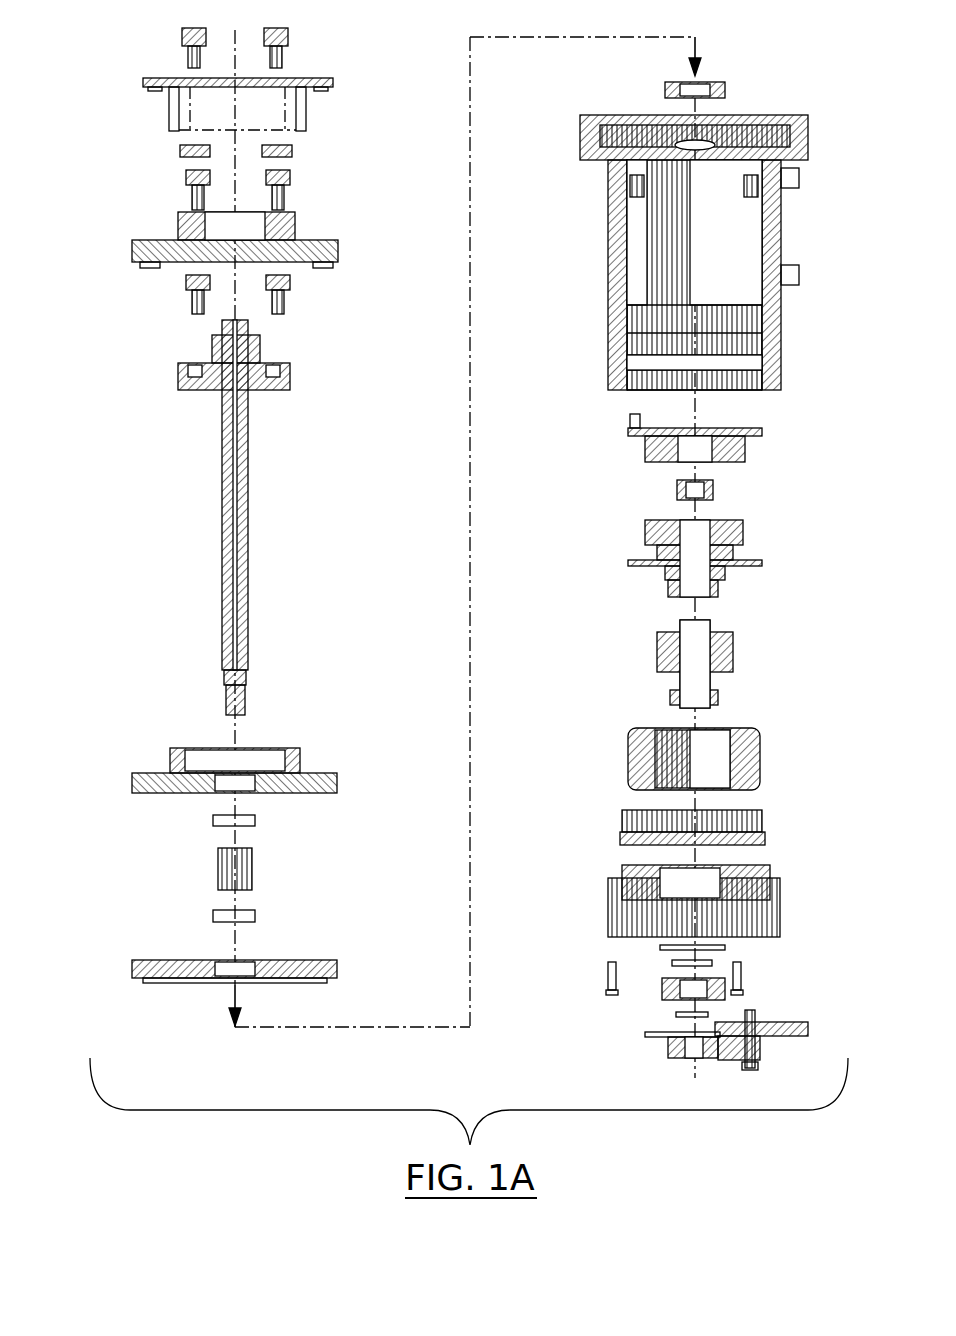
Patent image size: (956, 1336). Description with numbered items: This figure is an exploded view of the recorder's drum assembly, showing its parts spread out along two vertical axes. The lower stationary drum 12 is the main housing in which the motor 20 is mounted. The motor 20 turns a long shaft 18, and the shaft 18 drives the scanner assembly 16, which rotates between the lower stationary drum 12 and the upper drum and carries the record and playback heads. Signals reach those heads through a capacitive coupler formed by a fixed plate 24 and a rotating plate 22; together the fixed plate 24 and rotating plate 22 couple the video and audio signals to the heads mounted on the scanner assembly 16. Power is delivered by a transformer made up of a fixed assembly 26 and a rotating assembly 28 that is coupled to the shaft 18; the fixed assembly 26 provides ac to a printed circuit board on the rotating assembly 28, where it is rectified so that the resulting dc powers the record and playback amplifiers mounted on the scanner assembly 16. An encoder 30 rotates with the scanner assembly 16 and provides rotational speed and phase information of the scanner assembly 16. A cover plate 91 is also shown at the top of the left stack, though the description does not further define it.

The top cover plate 91 is at (153, 78).
The scanner assembly 16 is at (156, 228).
The shaft 18 is at (222, 490).
The rotating plate 22 is at (135, 790).
The fixed plate 24 is at (140, 962).
The lower stationary drum 12 is at (610, 178).
The fixed assembly 26 is at (760, 446).
The rotating assembly 28 is at (745, 545).
The motor 20 is at (735, 645).
The encoder 30 is at (762, 1022).